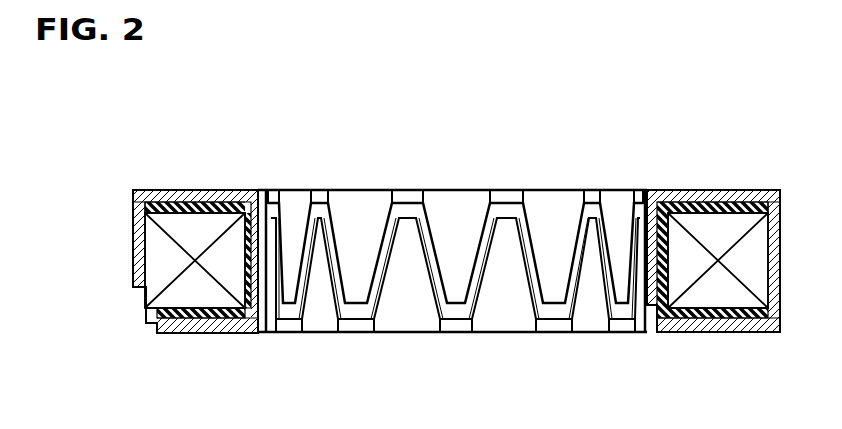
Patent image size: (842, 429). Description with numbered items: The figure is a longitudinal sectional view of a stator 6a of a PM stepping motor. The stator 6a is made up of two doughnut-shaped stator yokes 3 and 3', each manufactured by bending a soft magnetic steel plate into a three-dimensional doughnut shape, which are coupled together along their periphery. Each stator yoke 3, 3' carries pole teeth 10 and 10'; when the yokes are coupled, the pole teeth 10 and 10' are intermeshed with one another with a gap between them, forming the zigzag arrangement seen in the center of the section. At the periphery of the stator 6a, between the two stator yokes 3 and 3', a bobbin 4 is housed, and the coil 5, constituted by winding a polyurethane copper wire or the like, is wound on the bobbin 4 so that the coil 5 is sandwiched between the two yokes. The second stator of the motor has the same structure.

The stator 6a is at (692, 181).
The stator yoke 3 is at (459, 261).
The stator yoke 3' is at (468, 358).
The bobbin 4 is at (158, 315).
The coil 5 is at (162, 269).
The pole teeth 10 is at (444, 211).
The pole teeth 10' is at (453, 309).